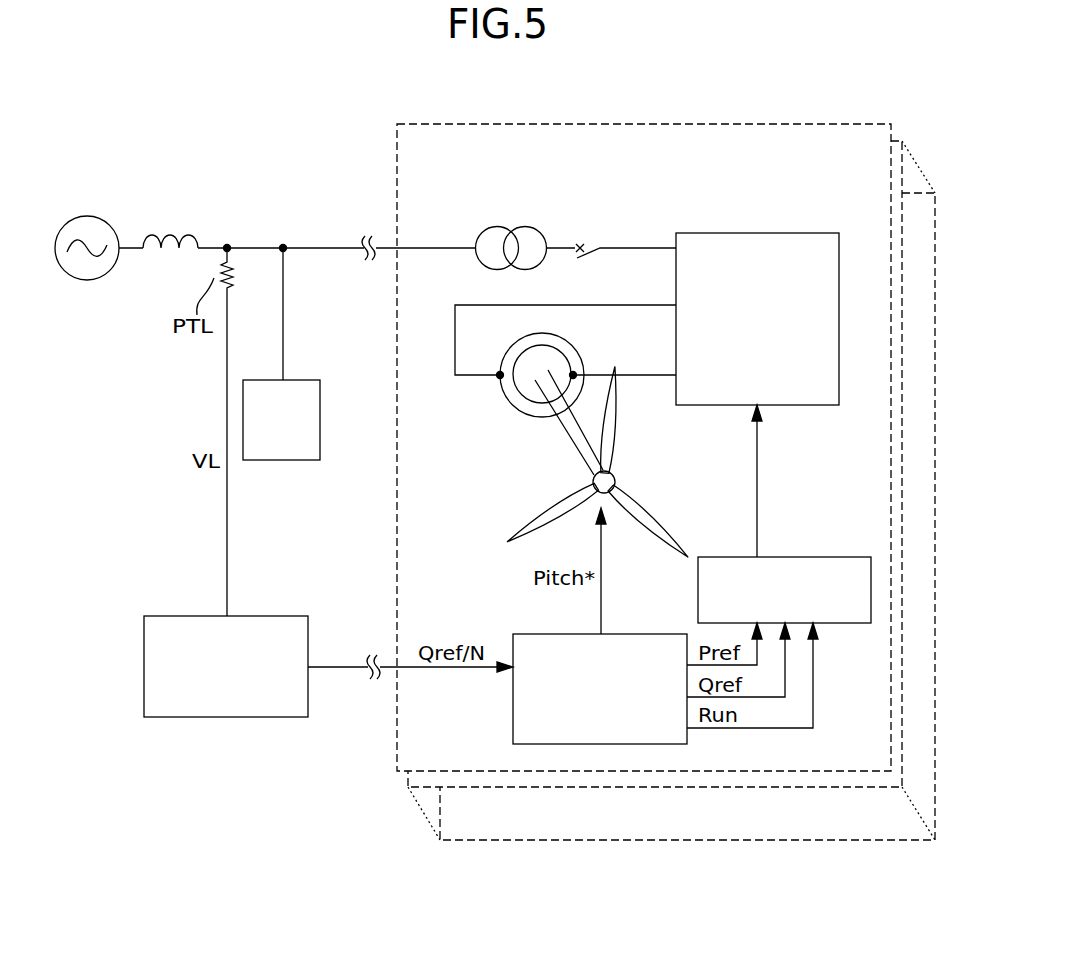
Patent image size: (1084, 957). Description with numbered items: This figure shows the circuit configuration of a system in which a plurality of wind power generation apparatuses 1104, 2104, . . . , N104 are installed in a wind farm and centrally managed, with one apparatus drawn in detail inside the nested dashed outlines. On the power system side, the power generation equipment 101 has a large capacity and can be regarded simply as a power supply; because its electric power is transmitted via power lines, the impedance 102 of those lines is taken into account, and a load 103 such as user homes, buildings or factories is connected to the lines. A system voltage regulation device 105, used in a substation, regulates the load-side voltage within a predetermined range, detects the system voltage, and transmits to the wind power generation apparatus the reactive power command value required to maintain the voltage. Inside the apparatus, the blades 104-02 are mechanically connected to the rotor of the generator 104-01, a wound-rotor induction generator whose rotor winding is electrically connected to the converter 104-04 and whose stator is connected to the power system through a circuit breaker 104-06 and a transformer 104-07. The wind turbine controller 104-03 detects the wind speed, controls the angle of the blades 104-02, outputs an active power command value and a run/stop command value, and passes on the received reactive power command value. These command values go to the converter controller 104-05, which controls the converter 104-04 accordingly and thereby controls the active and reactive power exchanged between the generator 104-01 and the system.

The power generation equipment 101 is at (89, 217).
The impedance 102 is at (174, 234).
The load 103 is at (306, 380).
The system voltage regulation device 105 is at (192, 615).
The wind power generation apparatus 1104 is at (620, 125).
The wind power generation apparatus 2104 is at (407, 778).
The wind power generation apparatus N104 is at (463, 842).
The generator 104-01 is at (520, 413).
The blades 104-02 is at (620, 420).
The wind turbine controller 104-03 is at (523, 633).
The converter 104-04 is at (785, 210).
The converter controller 104-05 is at (823, 532).
The circuit breaker 104-06 is at (594, 243).
The transformer 104-07 is at (470, 265).